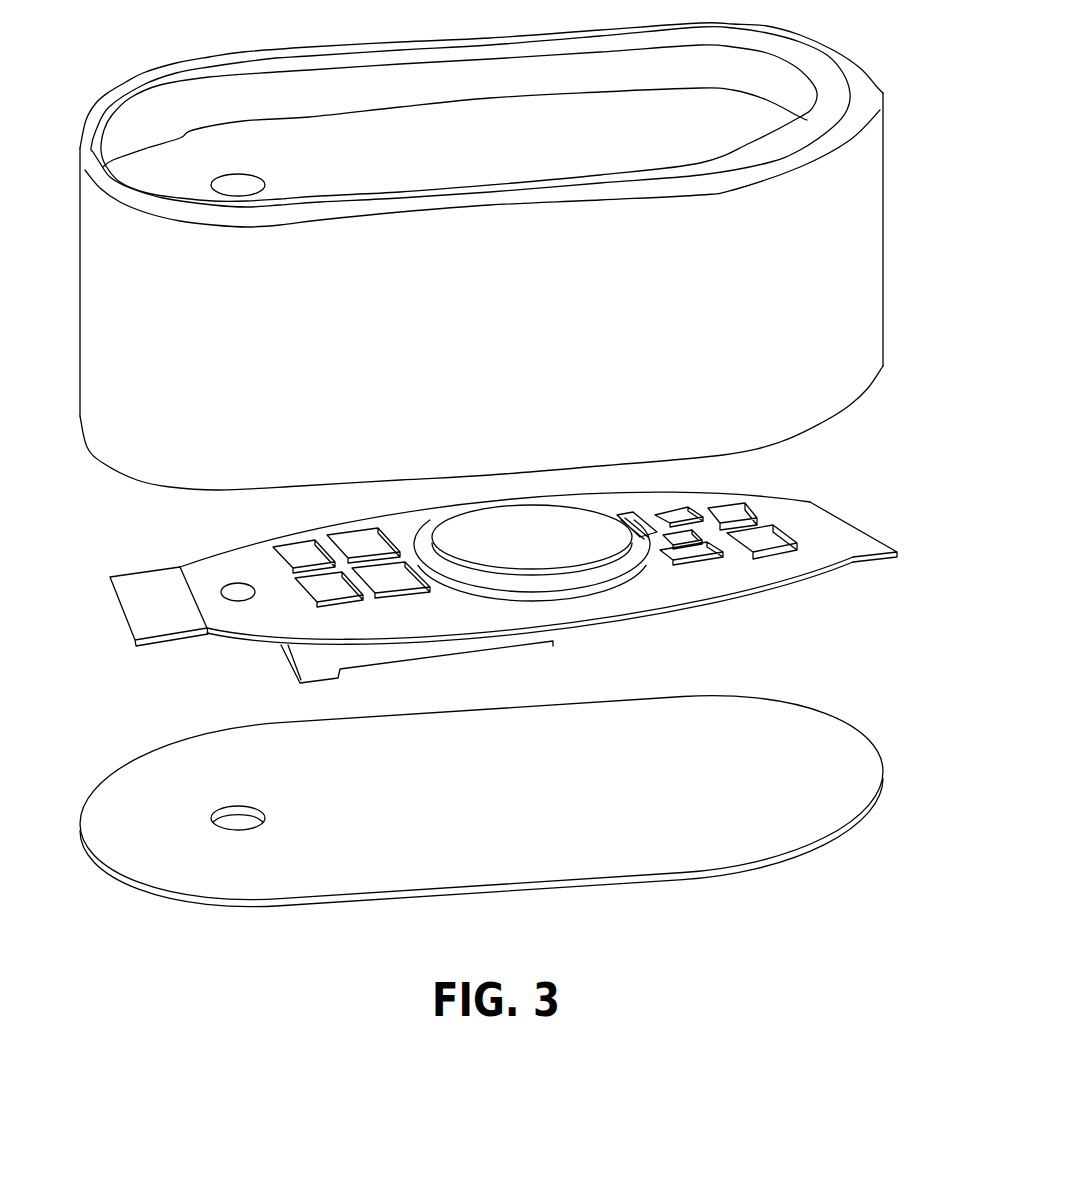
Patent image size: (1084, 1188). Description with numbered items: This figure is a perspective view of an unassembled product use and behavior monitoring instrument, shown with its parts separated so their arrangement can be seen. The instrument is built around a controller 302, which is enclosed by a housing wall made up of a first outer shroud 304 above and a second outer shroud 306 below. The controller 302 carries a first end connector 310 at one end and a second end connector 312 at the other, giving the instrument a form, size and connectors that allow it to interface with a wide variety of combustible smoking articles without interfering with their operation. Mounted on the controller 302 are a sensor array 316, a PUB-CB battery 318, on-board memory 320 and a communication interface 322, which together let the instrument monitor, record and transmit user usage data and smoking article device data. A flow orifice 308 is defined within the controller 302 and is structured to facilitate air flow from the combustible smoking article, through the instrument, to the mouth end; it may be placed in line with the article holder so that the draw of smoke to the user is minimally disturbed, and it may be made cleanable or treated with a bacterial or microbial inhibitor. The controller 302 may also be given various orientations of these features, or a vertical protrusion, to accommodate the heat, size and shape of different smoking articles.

The controller 302 is at (116, 537).
The first outer shroud 304 is at (886, 240).
The second outer shroud 306 is at (778, 833).
The flow orifice 308 is at (237, 589).
The first end connector 310 is at (412, 497).
The second end connector 312 is at (785, 611).
The sensor array 316 is at (297, 543).
The PUB-CB battery 318 is at (507, 524).
The on-board memory 320 is at (727, 508).
The communication interface 322 is at (462, 648).